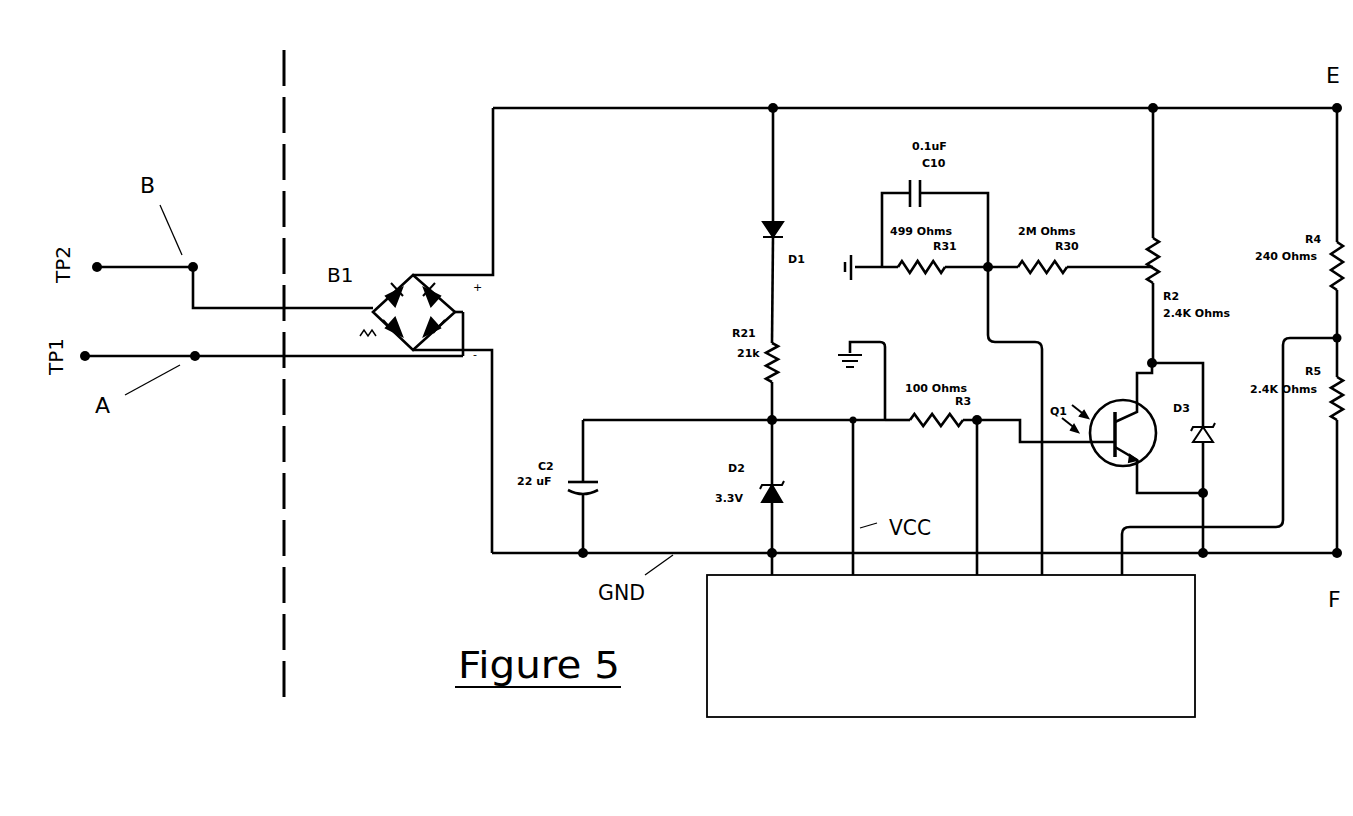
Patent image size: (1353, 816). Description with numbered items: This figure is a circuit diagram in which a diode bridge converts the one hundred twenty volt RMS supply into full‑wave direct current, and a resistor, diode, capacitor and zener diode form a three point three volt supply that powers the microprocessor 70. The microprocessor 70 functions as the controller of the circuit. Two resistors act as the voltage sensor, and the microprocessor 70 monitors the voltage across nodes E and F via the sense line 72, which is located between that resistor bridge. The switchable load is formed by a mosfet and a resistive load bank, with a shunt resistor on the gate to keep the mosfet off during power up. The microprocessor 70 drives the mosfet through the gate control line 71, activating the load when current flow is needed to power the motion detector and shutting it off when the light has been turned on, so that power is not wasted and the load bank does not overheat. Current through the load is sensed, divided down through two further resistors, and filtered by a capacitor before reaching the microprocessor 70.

The microprocessor 70 is at (1163, 675).
The gate control line 71 is at (970, 503).
The sense line 72 is at (1272, 530).